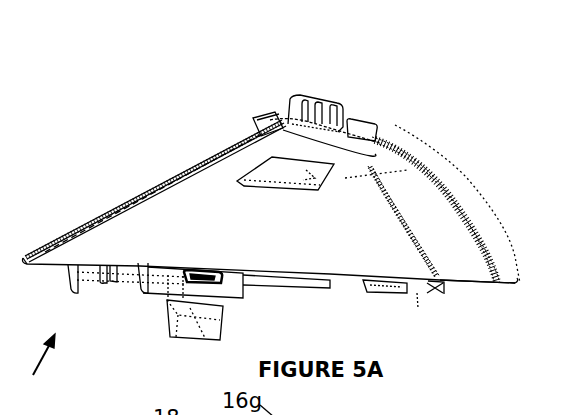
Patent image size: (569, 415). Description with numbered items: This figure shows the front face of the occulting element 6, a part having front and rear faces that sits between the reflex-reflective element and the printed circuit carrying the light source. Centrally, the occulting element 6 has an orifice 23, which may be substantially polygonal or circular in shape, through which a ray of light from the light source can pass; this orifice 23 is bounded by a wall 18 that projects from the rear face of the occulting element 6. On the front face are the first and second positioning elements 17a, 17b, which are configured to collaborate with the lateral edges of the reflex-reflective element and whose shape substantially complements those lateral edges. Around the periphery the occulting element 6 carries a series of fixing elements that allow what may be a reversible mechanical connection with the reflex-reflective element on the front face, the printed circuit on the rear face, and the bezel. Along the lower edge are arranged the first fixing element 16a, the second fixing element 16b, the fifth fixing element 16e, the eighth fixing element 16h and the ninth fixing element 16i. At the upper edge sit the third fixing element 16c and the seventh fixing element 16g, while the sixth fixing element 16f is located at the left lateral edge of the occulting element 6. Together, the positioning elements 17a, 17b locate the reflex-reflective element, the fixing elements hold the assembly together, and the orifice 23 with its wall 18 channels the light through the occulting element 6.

The first positioning element 17a is at (148, 190).
The second positioning element 17b is at (476, 258).
The orifice 23 is at (282, 168).
The seventh fixing element 16g is at (318, 100).
The third fixing element 16c is at (362, 125).
The sixth fixing element 16f is at (437, 188).
The wall 18 is at (316, 183).
The ninth fixing element 16i is at (108, 283).
The eighth fixing element 16h is at (222, 283).
The first fixing element 16a is at (182, 320).
The second fixing element 16b is at (418, 300).
The fifth fixing element 16e is at (430, 287).
The occulting element 6 is at (47, 414).